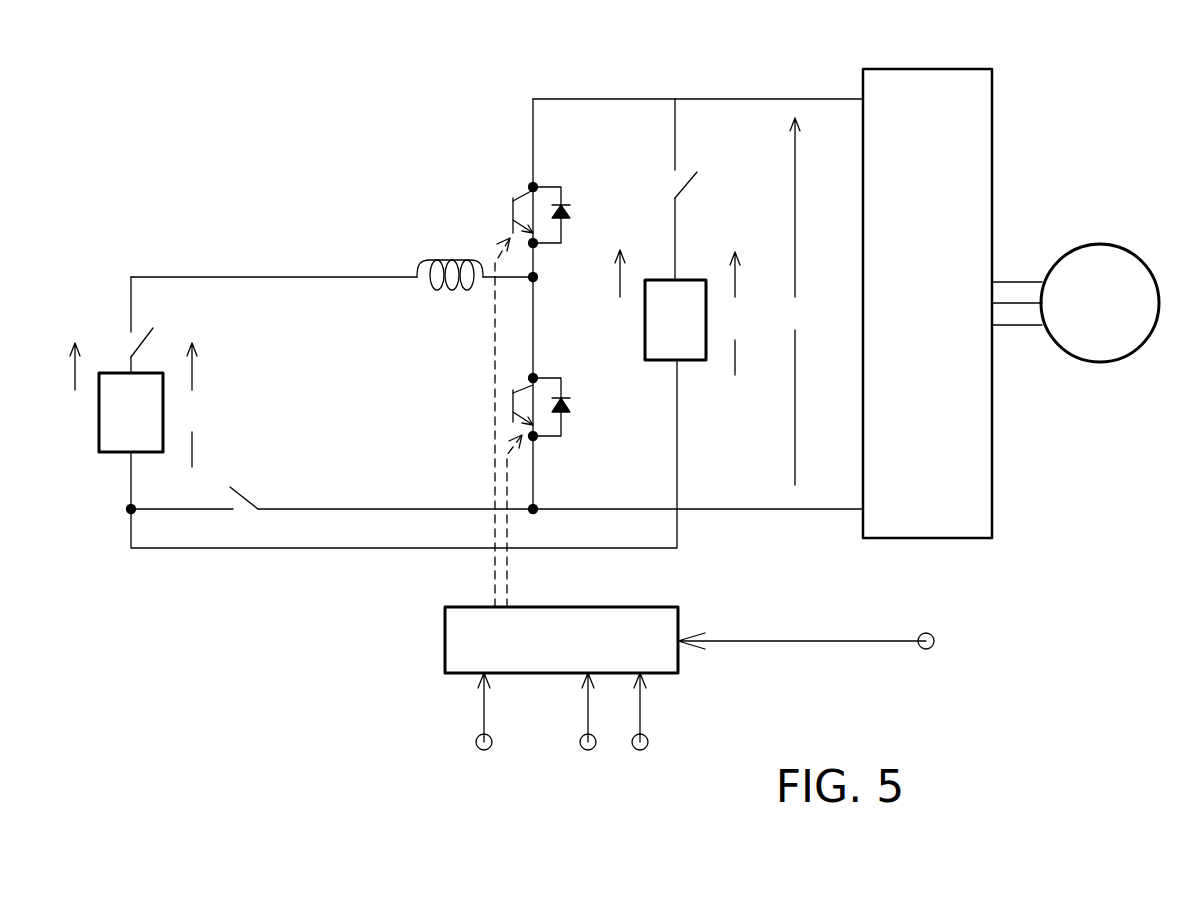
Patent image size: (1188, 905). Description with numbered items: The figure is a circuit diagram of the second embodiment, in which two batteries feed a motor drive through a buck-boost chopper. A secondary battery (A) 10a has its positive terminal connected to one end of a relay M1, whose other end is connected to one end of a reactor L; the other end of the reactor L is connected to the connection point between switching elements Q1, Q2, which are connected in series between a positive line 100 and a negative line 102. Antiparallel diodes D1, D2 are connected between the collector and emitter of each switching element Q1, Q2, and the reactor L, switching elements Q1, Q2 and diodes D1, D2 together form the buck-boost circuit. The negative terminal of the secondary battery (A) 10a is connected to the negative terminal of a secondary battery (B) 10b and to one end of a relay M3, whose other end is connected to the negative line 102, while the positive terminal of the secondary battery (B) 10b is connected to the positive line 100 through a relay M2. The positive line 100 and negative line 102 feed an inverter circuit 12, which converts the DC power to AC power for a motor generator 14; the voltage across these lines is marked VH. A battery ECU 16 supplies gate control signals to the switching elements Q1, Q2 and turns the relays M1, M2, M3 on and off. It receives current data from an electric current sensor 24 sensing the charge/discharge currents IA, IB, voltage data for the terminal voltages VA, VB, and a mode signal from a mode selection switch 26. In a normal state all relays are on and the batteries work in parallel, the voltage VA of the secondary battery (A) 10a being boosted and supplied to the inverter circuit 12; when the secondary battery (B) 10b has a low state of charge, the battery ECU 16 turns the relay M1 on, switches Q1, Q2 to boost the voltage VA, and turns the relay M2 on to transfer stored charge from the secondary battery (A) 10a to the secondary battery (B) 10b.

The inverter circuit 12 is at (932, 68).
The motor generator 14 is at (1122, 247).
The positive line 100 is at (732, 98).
The negative line 102 is at (778, 512).
The secondary battery (A) 10a is at (108, 455).
The secondary battery (B) 10b is at (692, 278).
The battery ECU 16 is at (445, 634).
The electric current sensor 24 is at (483, 750).
The mode selection switch 26 is at (934, 637).
The relay M1 is at (128, 339).
The relay M2 is at (667, 185).
The relay M3 is at (255, 497).
The switching element Q1 is at (518, 192).
The switching element Q2 is at (503, 402).
The antiparallel diode D1 is at (573, 215).
The antiparallel diode D2 is at (572, 407).
The reactor L is at (452, 258).
The charge/discharge electric current of secondary battery (A) IA is at (73, 385).
The terminal voltage of secondary battery (A) VA is at (192, 405).
The charge/discharge electric current of secondary battery (B) IB is at (620, 291).
The terminal voltage of secondary battery (B) VB is at (735, 313).
The system voltage VH is at (794, 301).